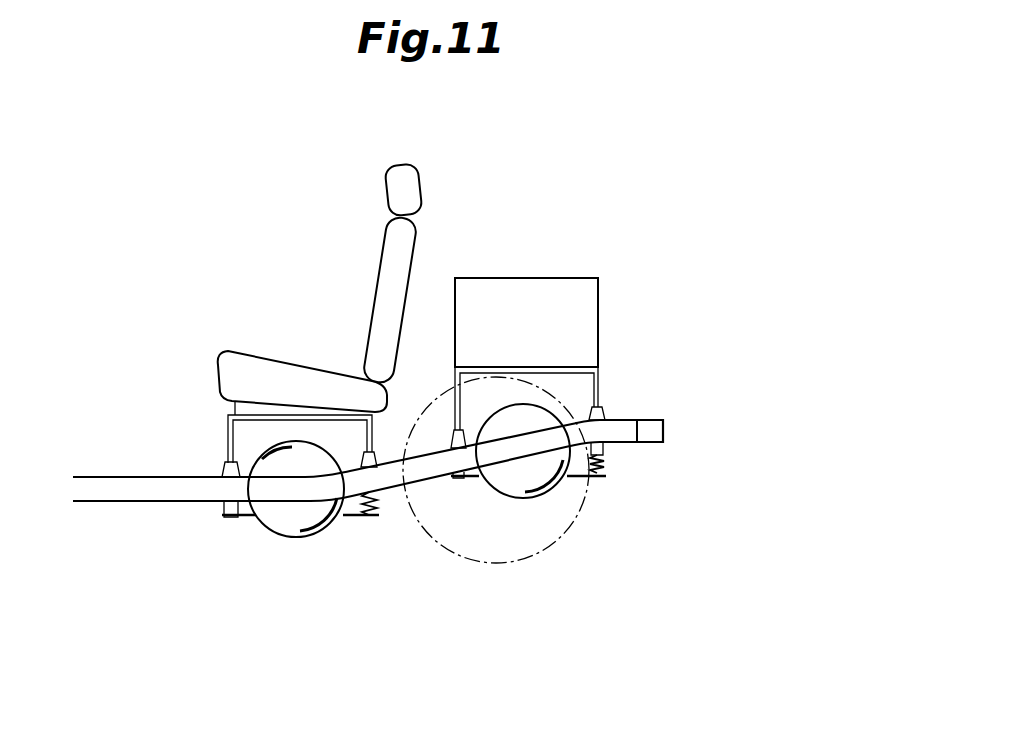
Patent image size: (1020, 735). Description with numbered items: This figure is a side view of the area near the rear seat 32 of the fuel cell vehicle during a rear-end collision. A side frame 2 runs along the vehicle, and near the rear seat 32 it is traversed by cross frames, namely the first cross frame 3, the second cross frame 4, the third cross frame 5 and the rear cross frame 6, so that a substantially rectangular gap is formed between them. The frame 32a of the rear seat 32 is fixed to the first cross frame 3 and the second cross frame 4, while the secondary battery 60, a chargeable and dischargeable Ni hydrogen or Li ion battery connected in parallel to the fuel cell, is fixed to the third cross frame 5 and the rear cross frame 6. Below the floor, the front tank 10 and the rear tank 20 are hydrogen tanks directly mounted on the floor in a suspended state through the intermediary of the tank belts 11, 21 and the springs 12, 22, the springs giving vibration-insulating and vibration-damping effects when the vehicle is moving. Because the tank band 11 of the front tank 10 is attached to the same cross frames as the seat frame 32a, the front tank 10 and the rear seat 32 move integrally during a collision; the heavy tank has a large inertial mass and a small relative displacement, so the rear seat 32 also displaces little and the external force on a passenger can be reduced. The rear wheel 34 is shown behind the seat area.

The side frame 2 is at (112, 490).
The first cross frame 3 is at (223, 507).
The second cross frame 4 is at (376, 494).
The third cross frame 5 is at (458, 478).
The rear cross frame 6 is at (605, 448).
The front tank 10 is at (295, 520).
The tank belt 11 is at (253, 523).
The spring 12 is at (362, 517).
The rear tank 20 is at (527, 413).
The tank belt 21 is at (578, 478).
The spring 22 is at (603, 470).
The rear seat 32 is at (413, 193).
The frame of the rear seat 32a is at (230, 445).
The rear wheel 34 is at (518, 540).
The secondary battery 60 is at (538, 297).